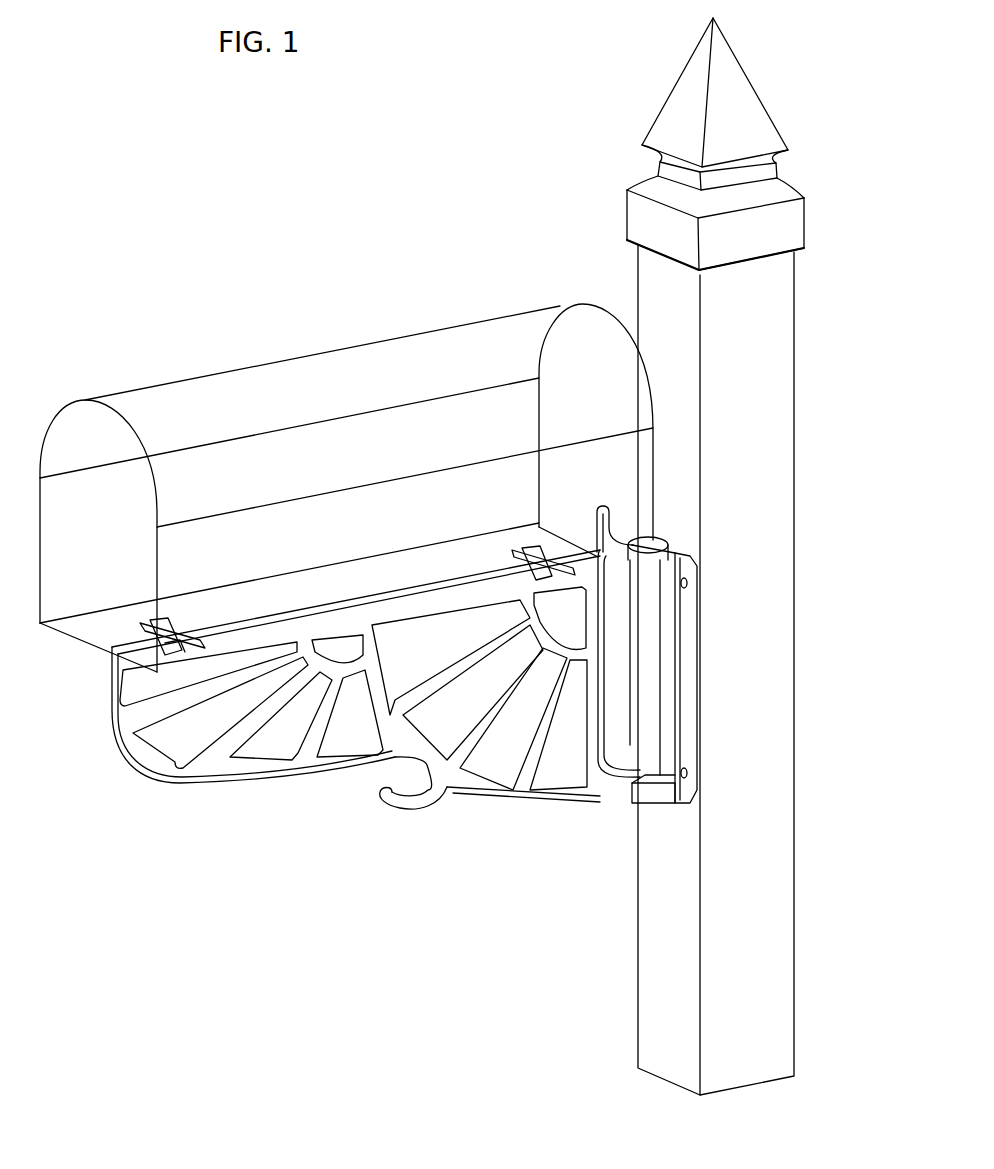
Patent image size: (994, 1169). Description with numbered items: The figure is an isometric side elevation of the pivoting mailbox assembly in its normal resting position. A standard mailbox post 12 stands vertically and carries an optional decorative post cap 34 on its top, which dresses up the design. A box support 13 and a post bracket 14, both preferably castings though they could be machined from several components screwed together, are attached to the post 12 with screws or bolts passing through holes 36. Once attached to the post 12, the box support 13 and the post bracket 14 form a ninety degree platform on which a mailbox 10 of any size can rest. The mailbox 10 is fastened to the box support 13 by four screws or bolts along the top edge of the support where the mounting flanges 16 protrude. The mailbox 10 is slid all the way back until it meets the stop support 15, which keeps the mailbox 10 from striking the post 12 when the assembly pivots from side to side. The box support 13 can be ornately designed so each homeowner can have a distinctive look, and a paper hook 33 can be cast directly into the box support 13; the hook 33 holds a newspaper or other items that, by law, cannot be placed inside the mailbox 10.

The mailbox 10 is at (85, 403).
The mailbox post 12 is at (636, 286).
The box support 13 is at (270, 778).
The post bracket 14 is at (692, 744).
The stop support 15 is at (597, 527).
The mounting flanges 16 is at (172, 627).
The paper hook 33 is at (380, 797).
The decorative post cap 34 is at (660, 120).
The holes 36 is at (684, 583).